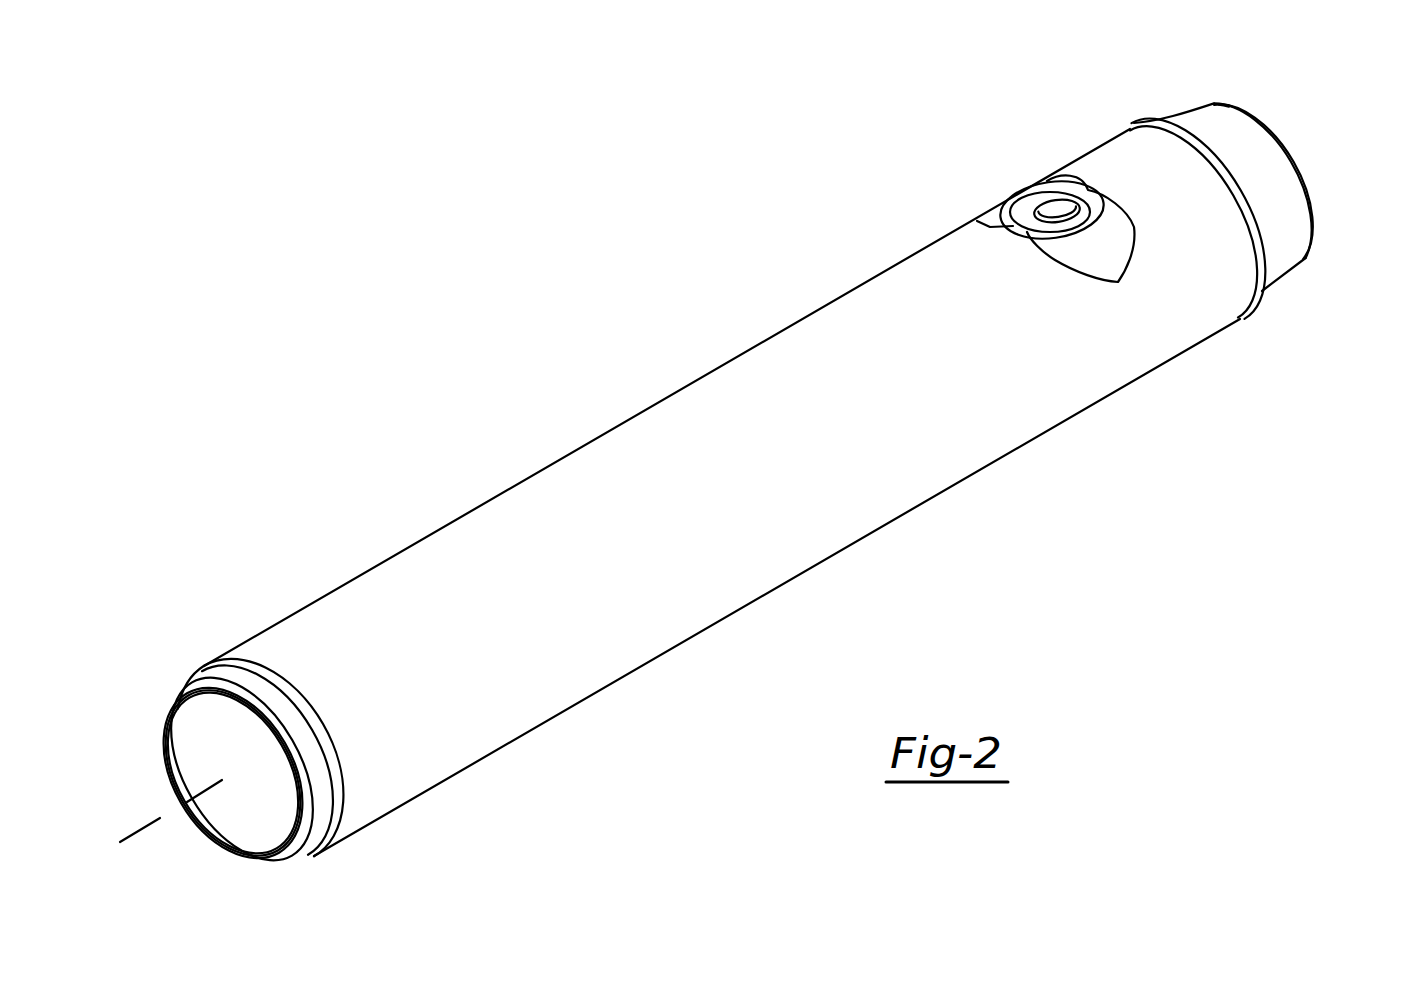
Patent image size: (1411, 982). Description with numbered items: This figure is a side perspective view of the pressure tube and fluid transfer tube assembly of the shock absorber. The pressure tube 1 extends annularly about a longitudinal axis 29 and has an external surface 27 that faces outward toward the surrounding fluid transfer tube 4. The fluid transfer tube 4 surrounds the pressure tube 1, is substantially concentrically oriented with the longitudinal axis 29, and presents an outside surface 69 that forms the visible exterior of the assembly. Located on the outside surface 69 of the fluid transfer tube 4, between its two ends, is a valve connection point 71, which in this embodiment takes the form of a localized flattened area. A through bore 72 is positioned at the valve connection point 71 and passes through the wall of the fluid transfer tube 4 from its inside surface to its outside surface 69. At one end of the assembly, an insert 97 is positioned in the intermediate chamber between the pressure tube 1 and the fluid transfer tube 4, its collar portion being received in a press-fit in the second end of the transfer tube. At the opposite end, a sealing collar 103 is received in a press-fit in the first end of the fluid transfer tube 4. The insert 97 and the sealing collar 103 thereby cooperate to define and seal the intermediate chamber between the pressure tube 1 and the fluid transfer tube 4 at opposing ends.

The pressure tube 1 is at (307, 807).
The fluid transfer tube 4 is at (662, 450).
The external surface 27 is at (1257, 203).
The longitudinal axis 29 is at (158, 818).
The outside surface 69 is at (752, 489).
The valve connection point 71 is at (1055, 167).
The through bore 72 is at (1063, 213).
The insert 97 is at (1253, 245).
The sealing collar 103 is at (248, 664).